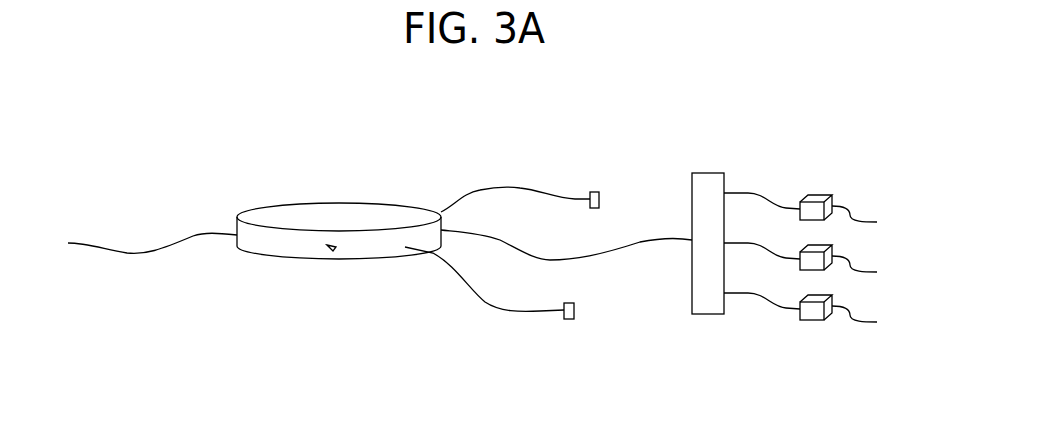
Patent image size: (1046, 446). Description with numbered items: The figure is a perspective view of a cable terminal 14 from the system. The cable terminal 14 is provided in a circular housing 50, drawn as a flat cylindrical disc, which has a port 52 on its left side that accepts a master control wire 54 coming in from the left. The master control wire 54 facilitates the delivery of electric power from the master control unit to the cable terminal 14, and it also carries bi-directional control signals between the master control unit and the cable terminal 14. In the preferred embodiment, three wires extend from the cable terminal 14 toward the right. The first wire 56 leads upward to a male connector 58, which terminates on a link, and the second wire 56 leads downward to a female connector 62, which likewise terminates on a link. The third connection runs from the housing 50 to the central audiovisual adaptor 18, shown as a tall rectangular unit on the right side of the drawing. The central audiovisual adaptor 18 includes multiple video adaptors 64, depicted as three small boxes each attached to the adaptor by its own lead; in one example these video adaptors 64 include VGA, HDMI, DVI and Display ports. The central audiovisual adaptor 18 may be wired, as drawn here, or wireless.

The cable terminal 14 is at (331, 251).
The central audiovisual adaptor 18 is at (711, 178).
The circular housing 50 is at (343, 216).
The port 52 is at (237, 222).
The master control wire 54 is at (160, 252).
The wire 56 is at (505, 187).
The male connector 58 is at (594, 192).
The female connector 62 is at (569, 319).
The video adaptors 64 is at (815, 264).